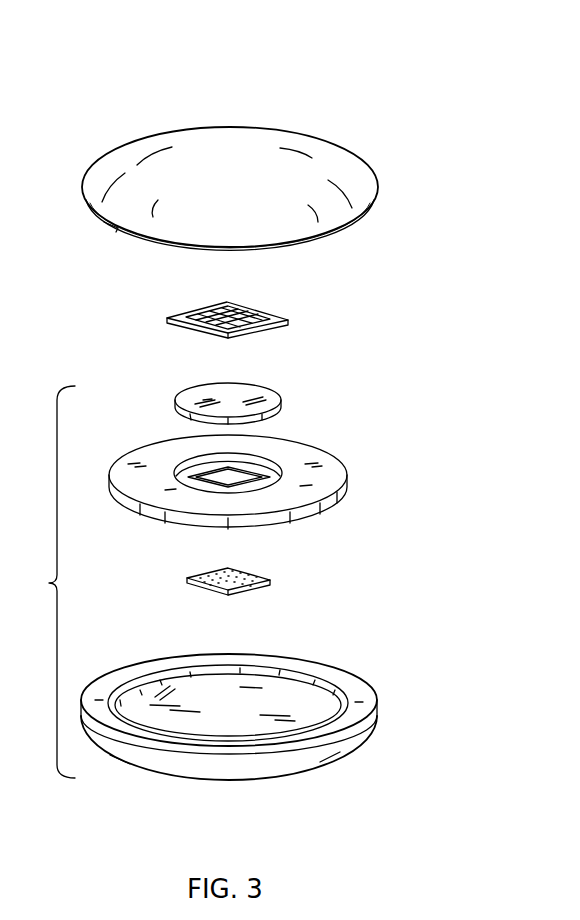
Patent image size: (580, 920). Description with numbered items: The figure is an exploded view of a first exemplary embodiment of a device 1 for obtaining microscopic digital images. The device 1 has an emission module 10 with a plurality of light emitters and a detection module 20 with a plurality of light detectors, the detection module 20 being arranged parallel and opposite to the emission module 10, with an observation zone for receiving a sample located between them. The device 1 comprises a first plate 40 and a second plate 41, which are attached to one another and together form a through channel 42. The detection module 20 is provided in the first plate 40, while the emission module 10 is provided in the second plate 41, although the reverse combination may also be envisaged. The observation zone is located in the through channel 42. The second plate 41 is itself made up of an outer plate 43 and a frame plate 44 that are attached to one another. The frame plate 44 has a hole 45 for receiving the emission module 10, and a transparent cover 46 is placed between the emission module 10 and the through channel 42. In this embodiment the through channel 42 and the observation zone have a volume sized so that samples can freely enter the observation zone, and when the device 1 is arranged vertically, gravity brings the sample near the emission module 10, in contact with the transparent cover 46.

The device 1 is at (94, 99).
The emission module 10 is at (258, 575).
The detection module 20 is at (270, 313).
The first plate 40 is at (340, 152).
The second plate 41 is at (49, 583).
The through channel 42 is at (90, 228).
The outer plate 43 is at (373, 692).
The frame plate 44 is at (343, 462).
The hole 45 is at (233, 480).
The transparent cover 46 is at (273, 388).